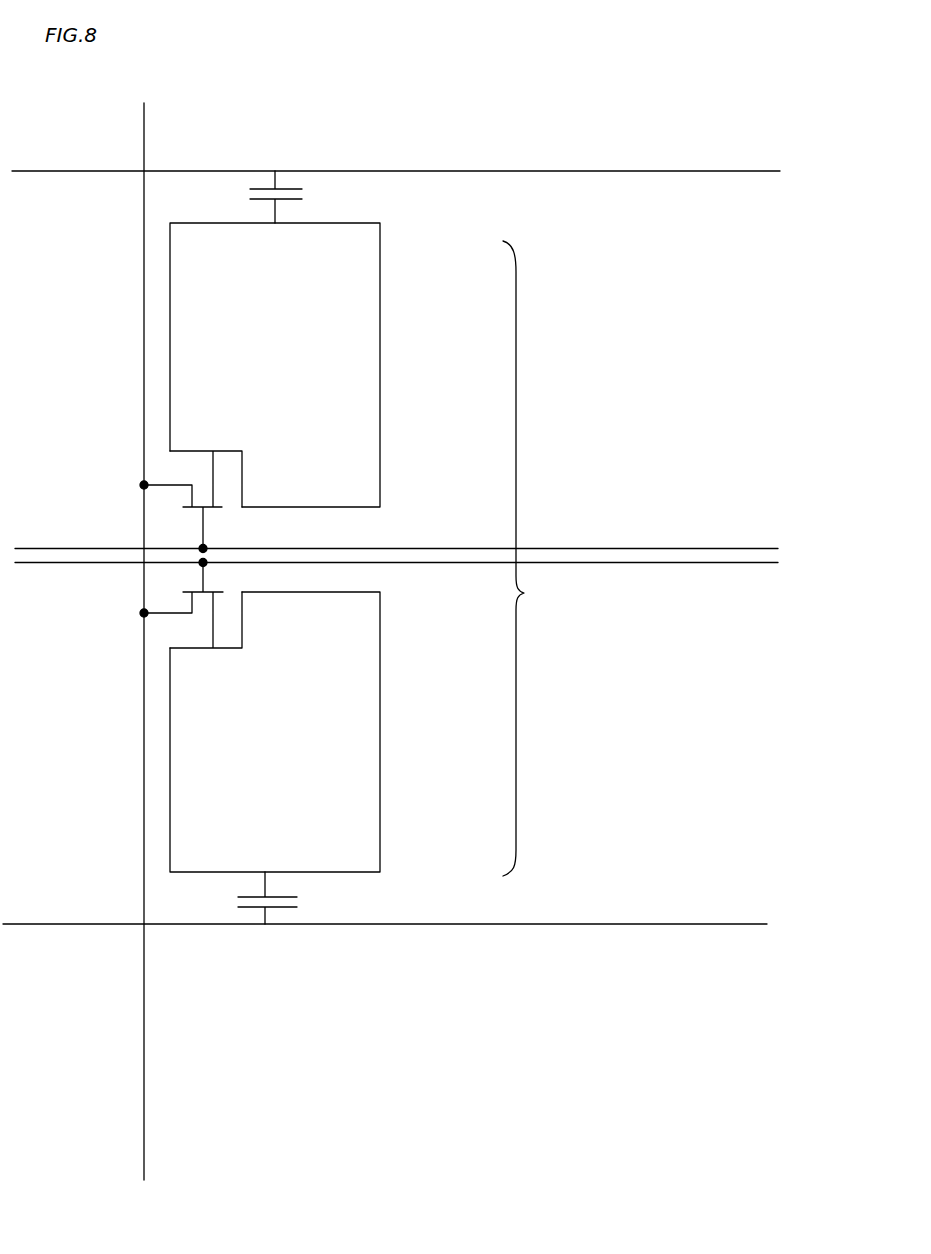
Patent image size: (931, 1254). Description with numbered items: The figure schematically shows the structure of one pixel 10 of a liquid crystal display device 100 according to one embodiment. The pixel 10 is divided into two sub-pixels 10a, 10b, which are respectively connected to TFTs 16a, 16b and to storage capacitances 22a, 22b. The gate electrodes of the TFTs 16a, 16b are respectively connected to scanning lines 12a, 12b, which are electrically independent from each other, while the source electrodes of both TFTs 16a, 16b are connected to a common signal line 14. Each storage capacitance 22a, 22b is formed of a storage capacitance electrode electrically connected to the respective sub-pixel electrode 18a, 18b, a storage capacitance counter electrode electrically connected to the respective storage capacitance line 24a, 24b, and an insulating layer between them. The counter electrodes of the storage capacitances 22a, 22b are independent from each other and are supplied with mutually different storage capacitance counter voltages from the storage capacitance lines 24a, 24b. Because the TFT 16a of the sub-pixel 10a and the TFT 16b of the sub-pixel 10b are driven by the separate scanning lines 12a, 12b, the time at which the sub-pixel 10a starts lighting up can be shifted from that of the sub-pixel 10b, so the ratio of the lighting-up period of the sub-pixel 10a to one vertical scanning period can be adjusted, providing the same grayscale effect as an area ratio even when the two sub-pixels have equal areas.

The liquid crystal display device 100 is at (444, 167).
The pixel 10 is at (532, 558).
The sub-pixel 10a is at (361, 367).
The sub-pixel 10b is at (361, 686).
The scanning line 12a is at (589, 548).
The scanning line 12b is at (604, 566).
The signal line 14 is at (144, 288).
The TFT 16a is at (180, 479).
The TFT 16b is at (167, 597).
The sub-pixel electrode 18a is at (185, 378).
The sub-pixel electrode 18b is at (203, 722).
The storage capacitance 22a is at (303, 200).
The storage capacitance 22b is at (299, 903).
The storage capacitance line 24a is at (94, 170).
The storage capacitance line 24b is at (57, 922).